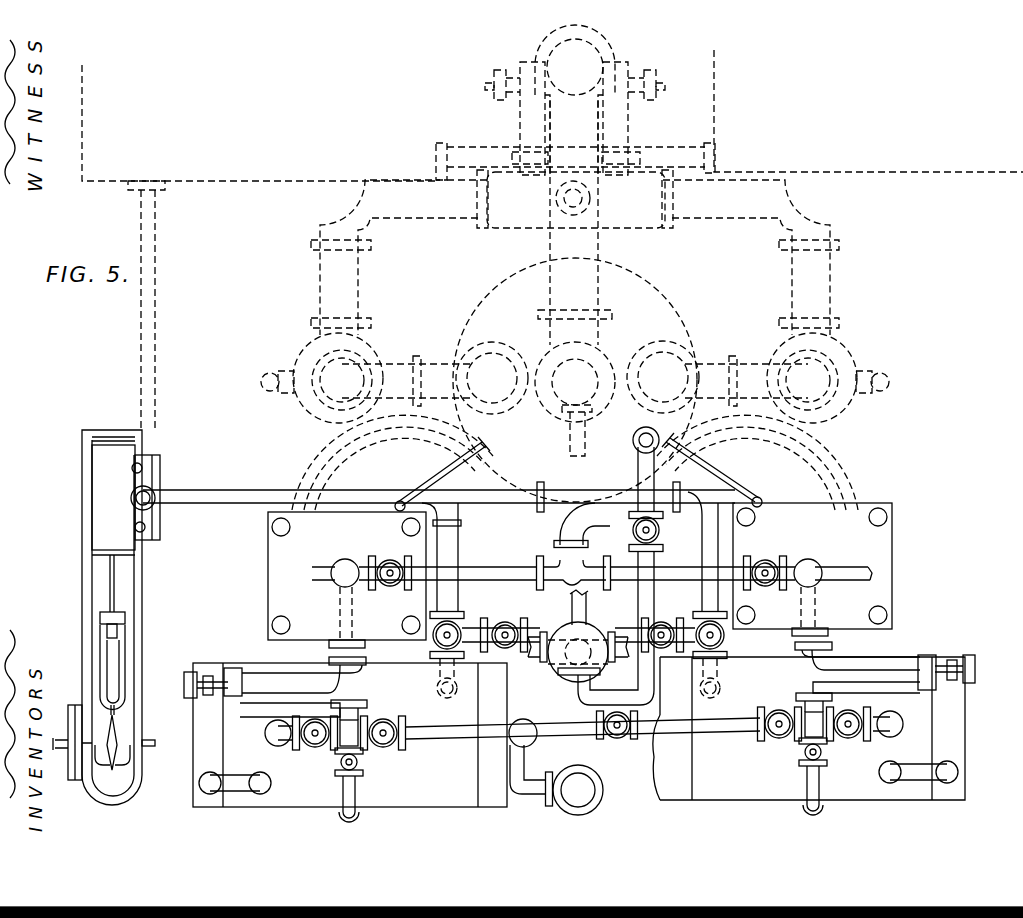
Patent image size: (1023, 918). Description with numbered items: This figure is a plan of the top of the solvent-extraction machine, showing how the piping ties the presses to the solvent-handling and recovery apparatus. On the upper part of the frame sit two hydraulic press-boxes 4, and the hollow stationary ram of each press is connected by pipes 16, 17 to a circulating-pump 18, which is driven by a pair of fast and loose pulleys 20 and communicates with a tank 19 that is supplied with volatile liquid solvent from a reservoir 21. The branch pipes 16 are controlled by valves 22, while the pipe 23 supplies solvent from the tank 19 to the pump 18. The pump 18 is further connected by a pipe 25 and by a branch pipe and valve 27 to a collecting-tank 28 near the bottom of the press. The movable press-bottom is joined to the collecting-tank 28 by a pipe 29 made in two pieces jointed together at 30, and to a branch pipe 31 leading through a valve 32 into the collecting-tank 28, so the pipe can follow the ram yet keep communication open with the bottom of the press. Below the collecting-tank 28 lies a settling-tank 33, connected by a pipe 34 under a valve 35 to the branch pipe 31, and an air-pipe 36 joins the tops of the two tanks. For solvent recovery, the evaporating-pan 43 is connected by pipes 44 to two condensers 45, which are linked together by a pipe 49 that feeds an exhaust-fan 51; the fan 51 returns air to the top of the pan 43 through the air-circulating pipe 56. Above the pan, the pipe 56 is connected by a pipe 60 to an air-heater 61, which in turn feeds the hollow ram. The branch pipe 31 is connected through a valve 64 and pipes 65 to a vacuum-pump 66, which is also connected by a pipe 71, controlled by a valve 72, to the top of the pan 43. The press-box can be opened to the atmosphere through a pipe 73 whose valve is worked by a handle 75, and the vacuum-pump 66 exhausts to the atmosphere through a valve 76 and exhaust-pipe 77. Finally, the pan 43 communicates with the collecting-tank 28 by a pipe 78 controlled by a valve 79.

The hydraulic press-box 4 is at (580, 571).
The branch pipe 16 is at (553, 571).
The pipe 17 is at (572, 530).
The circulating-pump 18 is at (121, 617).
The tank 19 is at (259, 123).
The fast and loose pulleys 20 is at (101, 742).
The reservoir 21 is at (868, 111).
The valve 22 is at (578, 594).
The pipe 23 is at (151, 305).
The pipe 25 is at (439, 502).
The branch pipe and valve 27 is at (589, 653).
The collecting-tank 28 is at (579, 732).
The pipe 29 is at (292, 674).
The joint 30 is at (232, 680).
The branch pipe 31 is at (368, 704).
The valve 32 is at (582, 737).
The settling-tank 33 is at (576, 732).
The pipe 34 is at (355, 797).
The valve 35 is at (360, 763).
The air-pipe 36 is at (578, 777).
The evaporating-pan 43 is at (576, 380).
The pipe 44 is at (575, 381).
The condenser 45 is at (575, 378).
The pipe 49 is at (575, 252).
The exhaust-fan 51 is at (575, 100).
The air-circulating pipe 56 is at (575, 261).
The pipe 60 is at (586, 442).
The air-heater 61 is at (568, 655).
The valve 64 is at (390, 722).
The pipe 65 is at (536, 757).
The vacuum-pump 66 is at (578, 790).
The pipe 71 is at (628, 700).
The valve 72 is at (654, 532).
The pipe 73 is at (846, 566).
The handle 75 is at (581, 678).
The valve 76 is at (617, 736).
The exhaust-pipe 77 is at (654, 790).
The pipe 78 is at (574, 577).
The valve 79 is at (578, 628).